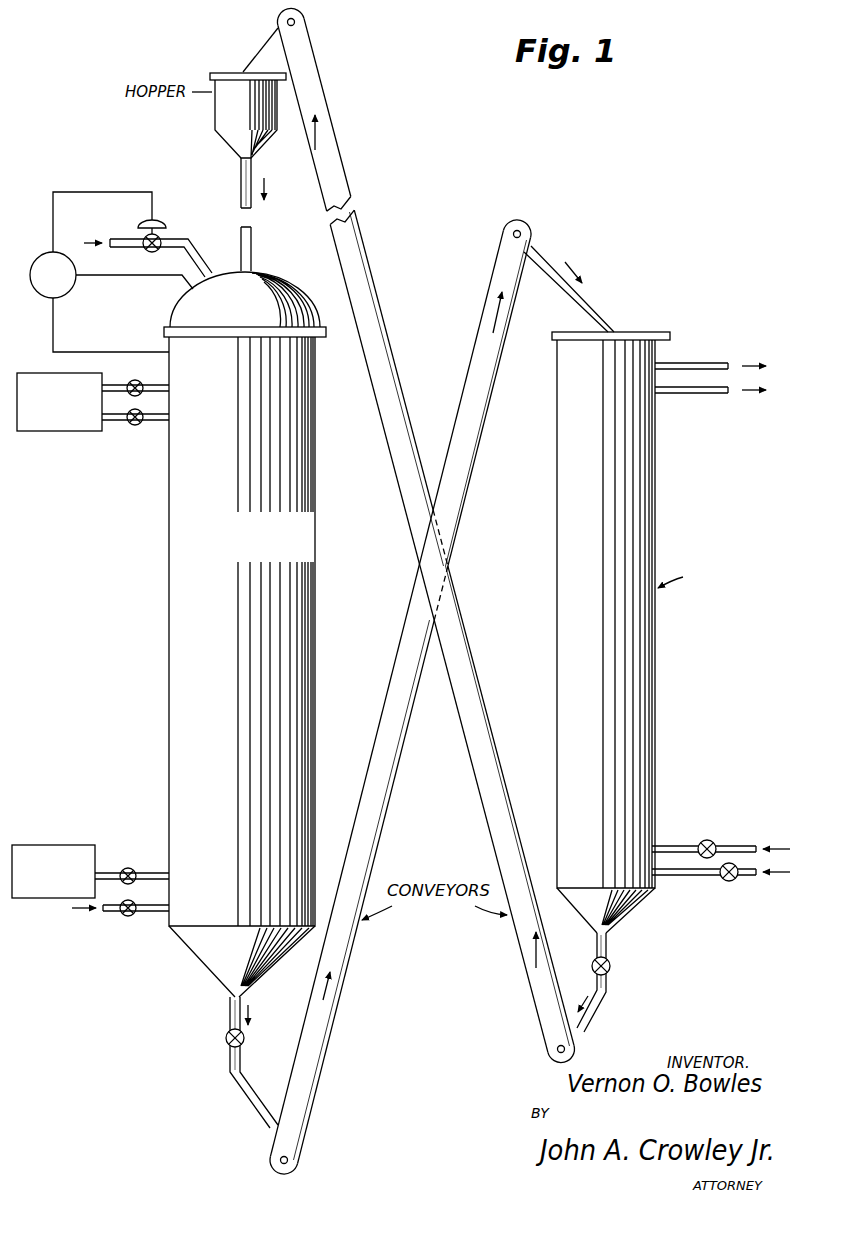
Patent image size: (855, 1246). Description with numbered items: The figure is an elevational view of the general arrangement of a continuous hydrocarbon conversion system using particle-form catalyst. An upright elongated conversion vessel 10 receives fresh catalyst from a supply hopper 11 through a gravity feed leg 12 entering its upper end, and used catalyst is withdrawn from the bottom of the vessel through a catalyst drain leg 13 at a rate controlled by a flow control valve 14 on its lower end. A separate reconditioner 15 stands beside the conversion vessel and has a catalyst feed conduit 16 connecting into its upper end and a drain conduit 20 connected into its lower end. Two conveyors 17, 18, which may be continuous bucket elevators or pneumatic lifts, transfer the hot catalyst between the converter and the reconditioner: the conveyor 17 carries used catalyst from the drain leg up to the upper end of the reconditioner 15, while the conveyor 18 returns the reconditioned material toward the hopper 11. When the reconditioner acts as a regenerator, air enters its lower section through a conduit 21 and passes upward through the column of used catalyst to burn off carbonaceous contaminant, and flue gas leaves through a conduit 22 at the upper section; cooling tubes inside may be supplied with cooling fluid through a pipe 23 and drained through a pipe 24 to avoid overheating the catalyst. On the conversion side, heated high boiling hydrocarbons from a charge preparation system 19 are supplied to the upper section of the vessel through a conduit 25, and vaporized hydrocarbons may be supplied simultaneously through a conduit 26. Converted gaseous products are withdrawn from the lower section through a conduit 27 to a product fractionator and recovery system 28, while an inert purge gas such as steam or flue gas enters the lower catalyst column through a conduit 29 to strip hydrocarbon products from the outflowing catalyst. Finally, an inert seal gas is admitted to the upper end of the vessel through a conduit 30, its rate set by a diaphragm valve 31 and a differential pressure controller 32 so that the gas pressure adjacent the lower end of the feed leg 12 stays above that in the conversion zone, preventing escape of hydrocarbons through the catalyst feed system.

The conversion vessel 10 is at (166, 620).
The supply hopper 11 is at (216, 115).
The gravity feed leg 12 is at (240, 176).
The catalyst drain leg 13 is at (228, 1010).
The flow control valve 14 is at (225, 1038).
The reconditioner 15 is at (645, 642).
The catalyst feed conduit 16 is at (546, 256).
The conveyor 17 is at (345, 978).
The conveyor 18 is at (497, 784).
The charge preparation system 19 is at (39, 364).
The drain conduit 20 is at (607, 948).
The air conduit 21 is at (750, 826).
The flue gas conduit 22 is at (713, 398).
The cooling fluid supply pipe 23 is at (735, 880).
The cooling fluid withdrawal pipe 24 is at (706, 363).
The hydrocarbon charge conduit 25 is at (116, 424).
The vaporized hydrocarbon conduit 26 is at (115, 386).
The product conduit 27 is at (108, 870).
The product fractionator and recovery system 28 is at (78, 845).
The purge gas conduit 29 is at (112, 918).
The seal gas conduit 30 is at (208, 252).
The diaphragm valve 31 is at (150, 251).
The differential pressure controller 32 is at (38, 259).